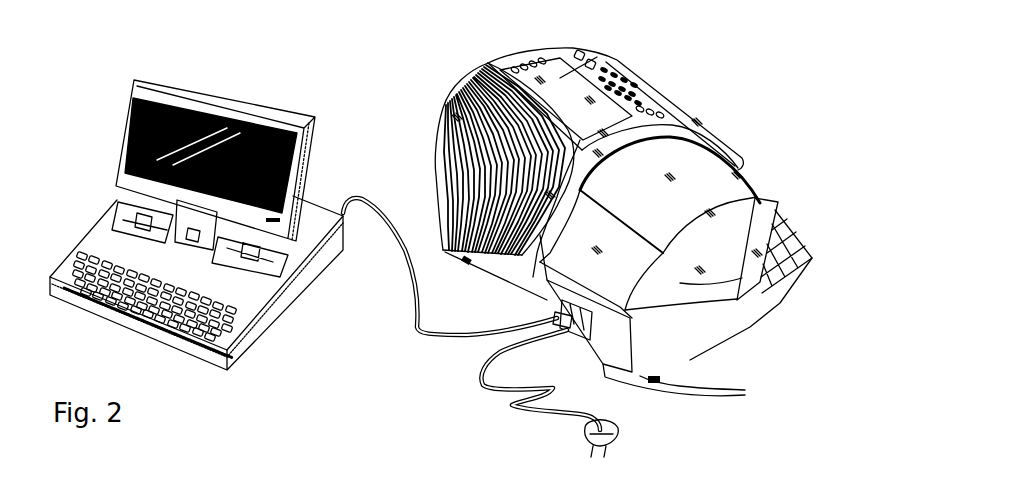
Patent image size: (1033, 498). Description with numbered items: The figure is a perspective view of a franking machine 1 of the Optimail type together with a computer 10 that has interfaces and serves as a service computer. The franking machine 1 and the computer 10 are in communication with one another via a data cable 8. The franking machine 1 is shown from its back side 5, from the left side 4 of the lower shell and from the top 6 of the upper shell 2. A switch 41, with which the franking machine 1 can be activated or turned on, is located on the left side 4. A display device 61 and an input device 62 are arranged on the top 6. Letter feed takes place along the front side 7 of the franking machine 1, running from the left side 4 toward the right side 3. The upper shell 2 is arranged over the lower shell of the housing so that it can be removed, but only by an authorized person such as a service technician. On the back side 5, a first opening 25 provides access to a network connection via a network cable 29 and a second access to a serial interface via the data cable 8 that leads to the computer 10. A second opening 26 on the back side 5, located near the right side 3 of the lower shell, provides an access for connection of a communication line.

The franking machine 1 is at (634, 224).
The upper shell 2 is at (800, 248).
The right side 3 is at (420, 182).
The left side 4 is at (726, 345).
The switch 41 is at (690, 380).
The back side 5 is at (660, 385).
The top 6 is at (639, 93).
The display device 61 is at (600, 52).
The input device 62 is at (660, 80).
The front side 7 is at (780, 222).
The data cable 8 is at (405, 333).
The computer 10 is at (245, 82).
The first opening 25 is at (585, 343).
The second opening 26 is at (468, 264).
The network cable 29 is at (510, 403).